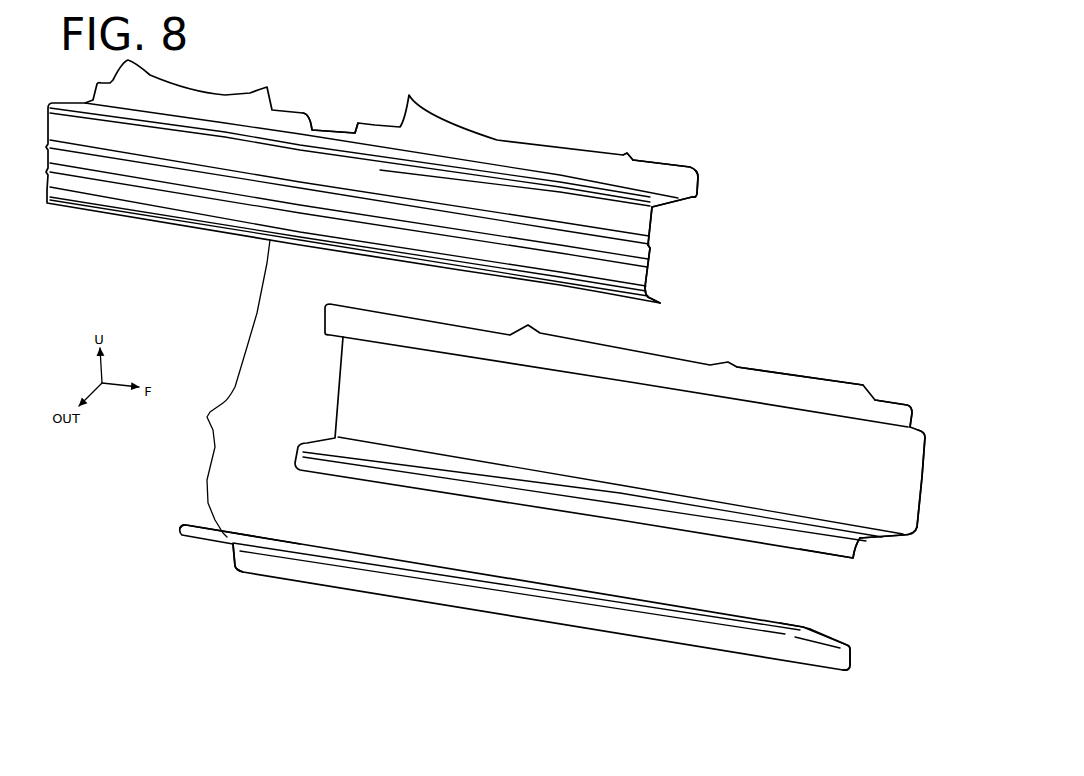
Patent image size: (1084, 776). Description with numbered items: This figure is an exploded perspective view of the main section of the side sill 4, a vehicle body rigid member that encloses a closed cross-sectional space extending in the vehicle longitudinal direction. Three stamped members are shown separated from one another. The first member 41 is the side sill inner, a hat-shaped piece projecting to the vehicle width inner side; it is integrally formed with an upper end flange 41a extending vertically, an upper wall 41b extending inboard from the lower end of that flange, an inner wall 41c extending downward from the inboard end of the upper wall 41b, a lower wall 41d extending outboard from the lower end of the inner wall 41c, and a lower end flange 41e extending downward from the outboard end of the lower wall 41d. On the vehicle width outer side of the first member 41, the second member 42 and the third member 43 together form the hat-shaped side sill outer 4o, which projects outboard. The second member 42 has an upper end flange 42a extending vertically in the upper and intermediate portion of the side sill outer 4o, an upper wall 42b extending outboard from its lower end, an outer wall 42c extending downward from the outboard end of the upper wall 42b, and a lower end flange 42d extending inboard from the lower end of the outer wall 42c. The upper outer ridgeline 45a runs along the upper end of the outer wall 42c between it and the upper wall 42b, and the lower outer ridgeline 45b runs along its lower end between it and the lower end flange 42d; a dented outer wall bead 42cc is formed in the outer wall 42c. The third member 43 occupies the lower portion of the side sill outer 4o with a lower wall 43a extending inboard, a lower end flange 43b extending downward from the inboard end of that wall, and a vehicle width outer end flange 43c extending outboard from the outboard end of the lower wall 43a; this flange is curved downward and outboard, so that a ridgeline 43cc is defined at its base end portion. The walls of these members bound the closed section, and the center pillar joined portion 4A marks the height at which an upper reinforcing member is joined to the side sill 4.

The side sill 4 is at (684, 119).
The center pillar joined portion 4A is at (349, 102).
The second member 42 is at (549, 135).
The upper end flange 42a is at (699, 186).
The upper wall 42b is at (684, 201).
The outer wall 42c is at (651, 227).
The outer wall bead 42cc is at (651, 258).
The lower end flange 42d is at (653, 298).
The upper outer ridgeline 45a is at (617, 197).
The lower outer ridgeline 45b is at (424, 258).
The side sill outer 4o is at (208, 417).
The first member 41 is at (749, 334).
The upper end flange 41a is at (820, 378).
The upper wall 41b is at (918, 430).
The inner wall 41c is at (927, 477).
The lower wall 41d is at (877, 538).
The lower end flange 41e is at (861, 549).
The third member 43 is at (440, 618).
The lower wall 43a is at (833, 641).
The lower end flange 43b is at (303, 583).
The vehicle width outer end flange 43c is at (207, 542).
The ridgeline 43cc is at (806, 631).